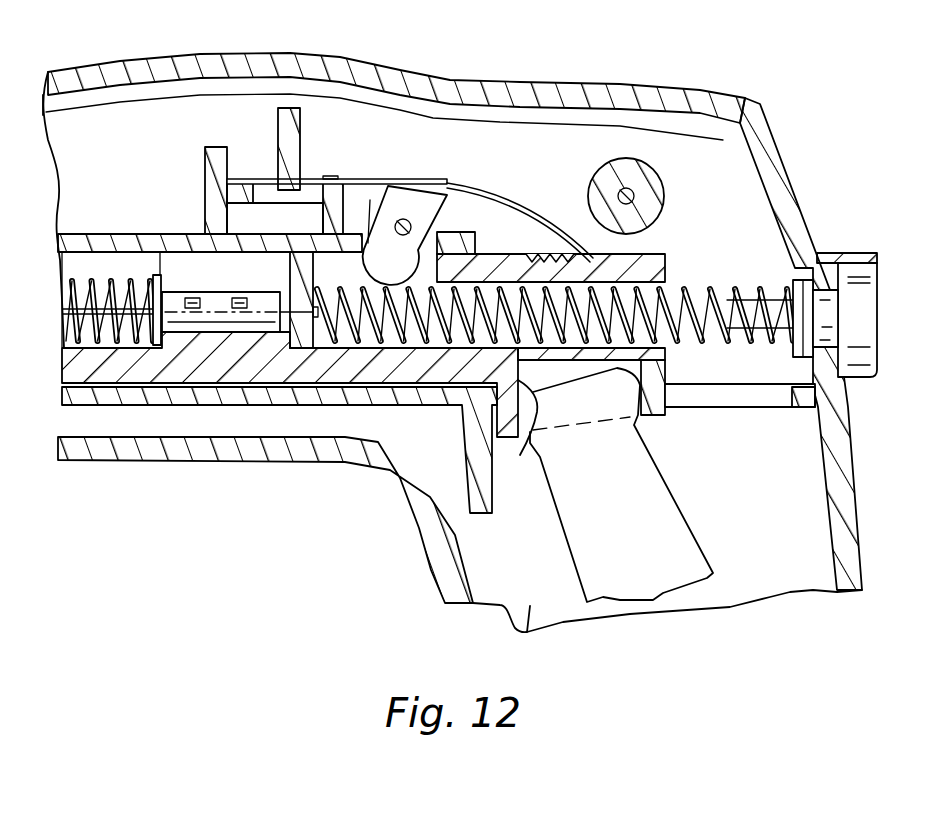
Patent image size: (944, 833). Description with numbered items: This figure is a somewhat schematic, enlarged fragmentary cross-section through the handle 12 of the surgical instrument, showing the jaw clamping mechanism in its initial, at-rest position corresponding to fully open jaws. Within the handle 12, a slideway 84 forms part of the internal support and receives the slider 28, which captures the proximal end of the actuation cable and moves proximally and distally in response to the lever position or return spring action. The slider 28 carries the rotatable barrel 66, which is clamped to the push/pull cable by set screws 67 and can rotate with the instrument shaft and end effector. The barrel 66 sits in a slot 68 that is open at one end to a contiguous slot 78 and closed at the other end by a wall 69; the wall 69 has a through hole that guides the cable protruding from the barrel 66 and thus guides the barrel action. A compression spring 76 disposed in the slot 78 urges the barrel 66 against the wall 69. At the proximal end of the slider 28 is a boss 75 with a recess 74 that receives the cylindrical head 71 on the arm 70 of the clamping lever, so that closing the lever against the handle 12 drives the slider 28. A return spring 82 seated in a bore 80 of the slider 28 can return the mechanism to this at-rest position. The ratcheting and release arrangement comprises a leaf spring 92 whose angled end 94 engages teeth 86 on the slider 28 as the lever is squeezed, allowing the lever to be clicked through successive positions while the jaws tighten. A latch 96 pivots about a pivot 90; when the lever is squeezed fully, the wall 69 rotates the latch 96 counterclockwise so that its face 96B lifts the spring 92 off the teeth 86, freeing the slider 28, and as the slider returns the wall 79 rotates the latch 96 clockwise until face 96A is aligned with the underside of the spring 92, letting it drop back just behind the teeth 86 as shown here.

The handle 12 is at (197, 50).
The slider 28 is at (257, 375).
The rotatable barrel 66 is at (217, 330).
The set screws 67 is at (233, 285).
The slot 68 is at (178, 258).
The wall 69 is at (338, 207).
The arm 70 is at (682, 540).
The cylindrical head 71 is at (641, 427).
The recess 74 is at (525, 432).
The boss 75 is at (667, 392).
The compression spring 76 is at (143, 283).
The slot 78 is at (83, 265).
The wall 79 is at (457, 255).
The bore 80 is at (625, 285).
The return spring 82 is at (763, 285).
The slideway 84 is at (311, 393).
The teeth 86 is at (533, 257).
The pivot 90 is at (376, 228).
The leaf spring 92 is at (553, 215).
The angled end 94 is at (598, 258).
The latch 96 is at (420, 207).
The latch face 96A is at (397, 215).
The latch face 96B is at (447, 187).